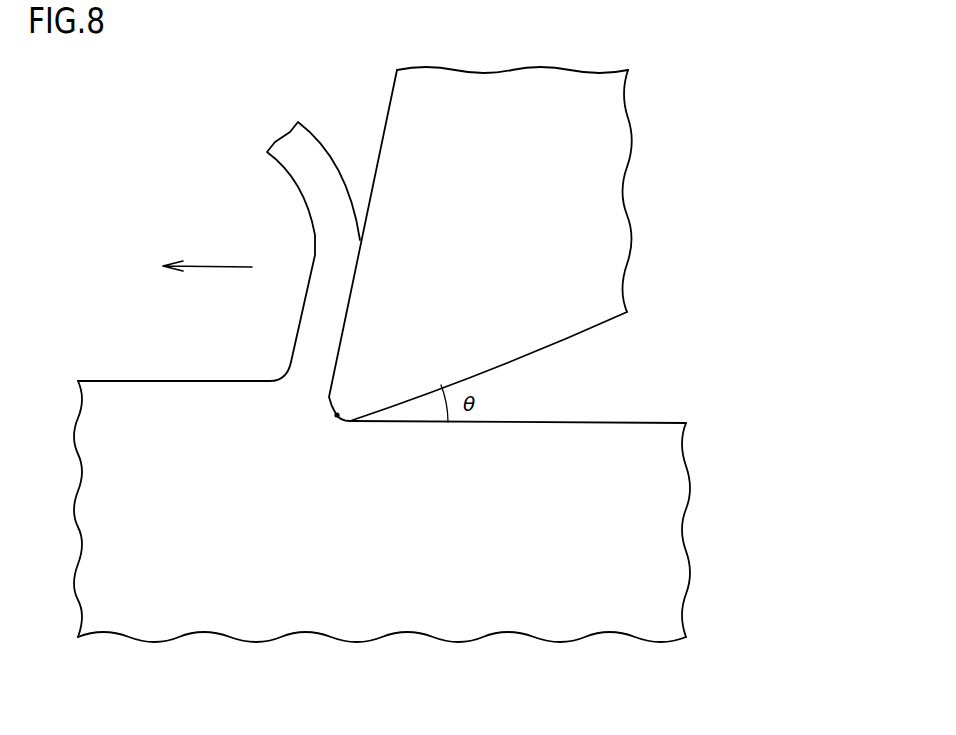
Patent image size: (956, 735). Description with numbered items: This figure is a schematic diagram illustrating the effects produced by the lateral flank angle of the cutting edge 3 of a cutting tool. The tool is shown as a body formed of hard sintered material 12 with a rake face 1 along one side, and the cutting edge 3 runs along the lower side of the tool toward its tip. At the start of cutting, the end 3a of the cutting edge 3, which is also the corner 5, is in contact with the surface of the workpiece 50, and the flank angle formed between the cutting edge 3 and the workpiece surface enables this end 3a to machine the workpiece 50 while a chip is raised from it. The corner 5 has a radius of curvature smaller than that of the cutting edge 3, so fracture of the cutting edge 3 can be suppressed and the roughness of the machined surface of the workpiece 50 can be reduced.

The rake face 1 is at (459, 355).
The hard sintered material 12 is at (509, 92).
The cutting edge 3 is at (559, 342).
The end of cutting edge 3a is at (337, 423).
The corner 5 is at (351, 447).
The workpiece 50 is at (382, 404).